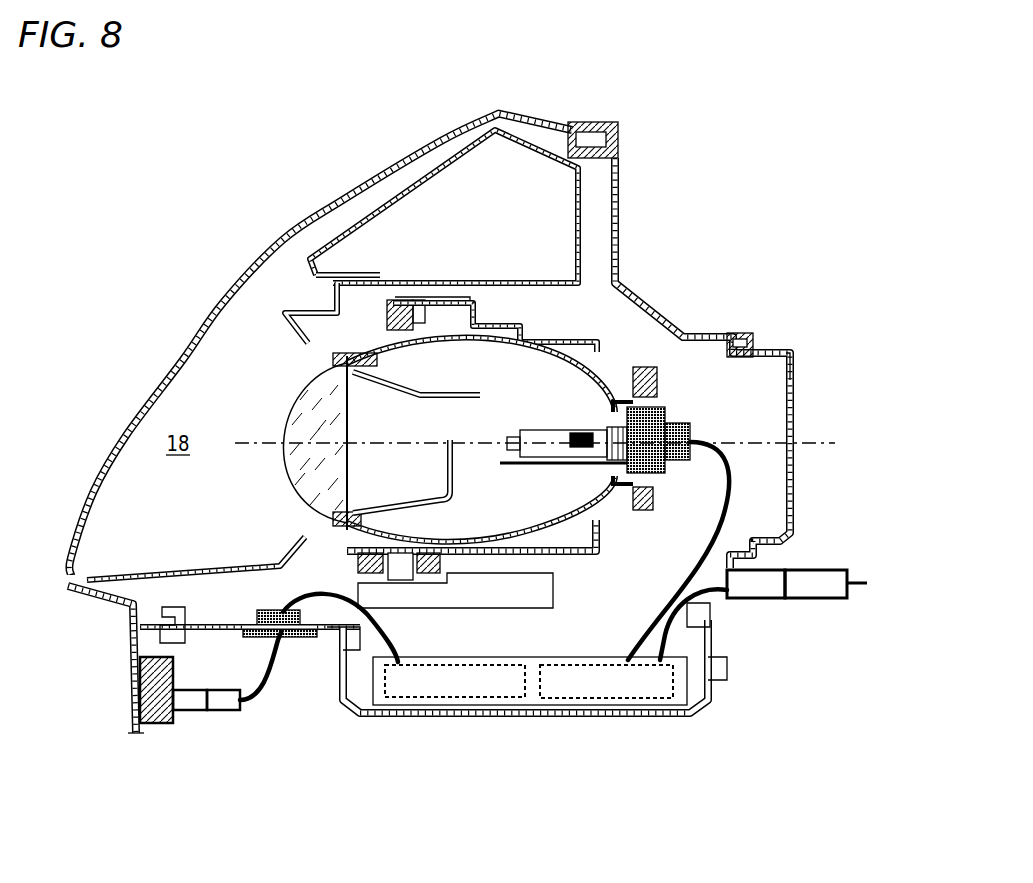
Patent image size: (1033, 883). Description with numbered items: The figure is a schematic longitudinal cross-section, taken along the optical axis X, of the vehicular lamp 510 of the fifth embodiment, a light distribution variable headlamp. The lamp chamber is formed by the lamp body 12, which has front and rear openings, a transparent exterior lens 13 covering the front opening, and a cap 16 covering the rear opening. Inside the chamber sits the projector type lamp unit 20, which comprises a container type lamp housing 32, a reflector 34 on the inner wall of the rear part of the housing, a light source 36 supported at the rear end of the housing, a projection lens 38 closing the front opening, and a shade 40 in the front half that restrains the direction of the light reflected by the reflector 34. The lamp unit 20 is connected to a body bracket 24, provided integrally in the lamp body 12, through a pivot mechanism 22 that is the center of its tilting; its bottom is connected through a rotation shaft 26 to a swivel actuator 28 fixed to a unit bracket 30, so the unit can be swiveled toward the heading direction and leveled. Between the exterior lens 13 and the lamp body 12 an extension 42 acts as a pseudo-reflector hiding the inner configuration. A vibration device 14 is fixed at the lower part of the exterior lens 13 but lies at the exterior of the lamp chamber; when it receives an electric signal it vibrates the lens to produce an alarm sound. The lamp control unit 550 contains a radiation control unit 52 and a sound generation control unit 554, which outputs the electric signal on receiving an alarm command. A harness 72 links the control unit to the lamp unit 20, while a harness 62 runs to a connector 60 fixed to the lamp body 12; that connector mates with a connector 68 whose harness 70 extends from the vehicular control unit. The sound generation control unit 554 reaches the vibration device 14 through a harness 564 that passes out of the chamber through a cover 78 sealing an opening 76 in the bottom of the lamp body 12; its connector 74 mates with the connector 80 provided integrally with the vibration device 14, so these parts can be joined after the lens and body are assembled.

The vehicular lamp 510 is at (648, 152).
The exterior lens 13 is at (340, 192).
The extension 42 is at (317, 312).
The pivot mechanism 22 is at (385, 318).
The body bracket 24 is at (513, 323).
The cap 16 is at (768, 356).
The reflector 34 is at (532, 357).
The lamp unit 20 is at (306, 384).
The projection lens 38 is at (295, 408).
The optical axis X is at (255, 443).
The shade 40 is at (428, 396).
The light source 36 is at (543, 432).
The lamp housing 32 is at (592, 373).
The harness 72 is at (727, 483).
The unit bracket 30 is at (600, 540).
The rotation shaft 26 is at (372, 565).
The swivel actuator 28 is at (558, 590).
The vibration device 14 is at (135, 692).
The connector 80 is at (183, 712).
The connector 74 is at (226, 712).
The cover 78 is at (300, 640).
The opening 76 is at (262, 638).
The lamp body 12 is at (322, 650).
The harness 62 is at (690, 604).
The lamp control unit 550 is at (567, 657).
The sound generation control unit 554 is at (472, 705).
The radiation control unit 52 is at (622, 705).
The harness 564 is at (395, 650).
The connector 60 is at (765, 600).
The connector 68 is at (815, 600).
The harness 70 is at (855, 590).